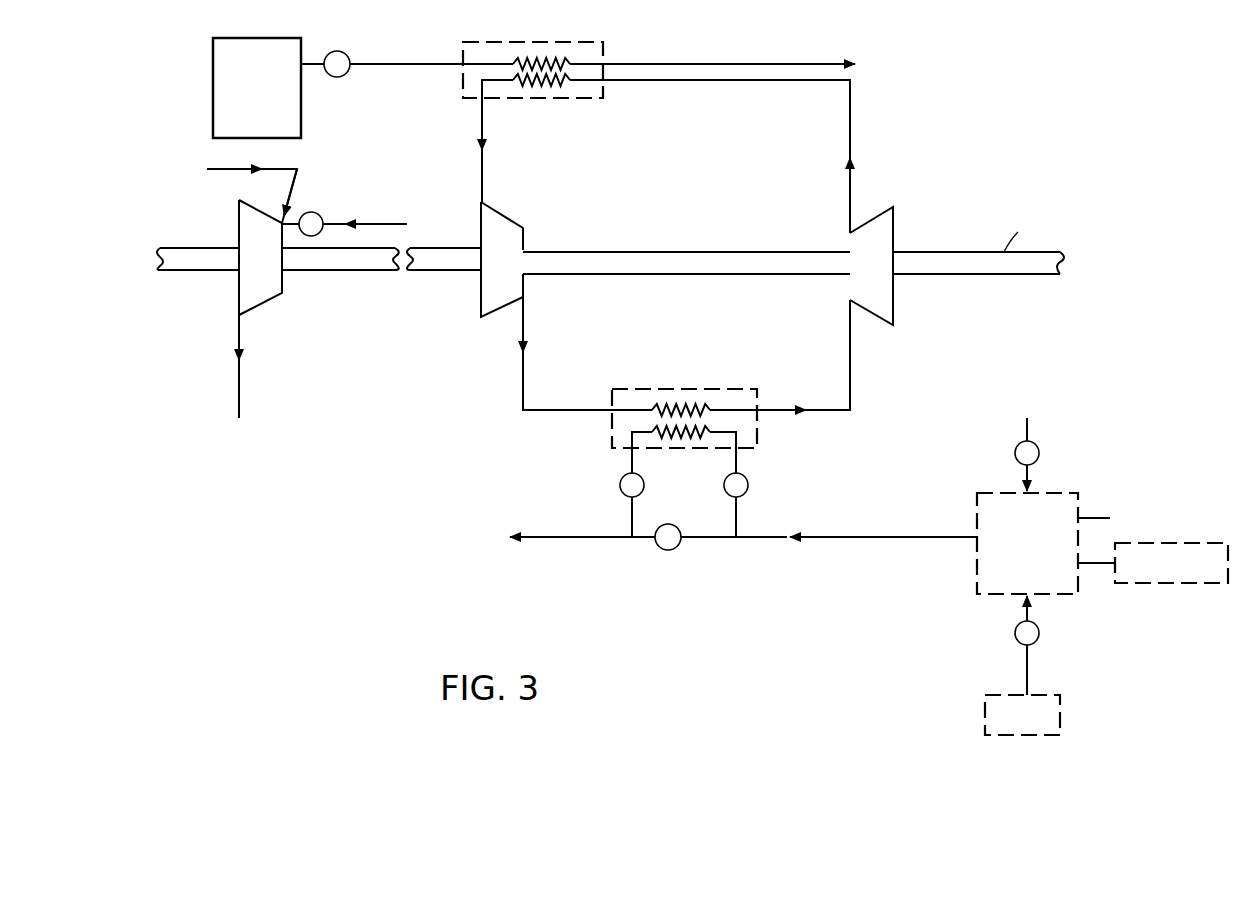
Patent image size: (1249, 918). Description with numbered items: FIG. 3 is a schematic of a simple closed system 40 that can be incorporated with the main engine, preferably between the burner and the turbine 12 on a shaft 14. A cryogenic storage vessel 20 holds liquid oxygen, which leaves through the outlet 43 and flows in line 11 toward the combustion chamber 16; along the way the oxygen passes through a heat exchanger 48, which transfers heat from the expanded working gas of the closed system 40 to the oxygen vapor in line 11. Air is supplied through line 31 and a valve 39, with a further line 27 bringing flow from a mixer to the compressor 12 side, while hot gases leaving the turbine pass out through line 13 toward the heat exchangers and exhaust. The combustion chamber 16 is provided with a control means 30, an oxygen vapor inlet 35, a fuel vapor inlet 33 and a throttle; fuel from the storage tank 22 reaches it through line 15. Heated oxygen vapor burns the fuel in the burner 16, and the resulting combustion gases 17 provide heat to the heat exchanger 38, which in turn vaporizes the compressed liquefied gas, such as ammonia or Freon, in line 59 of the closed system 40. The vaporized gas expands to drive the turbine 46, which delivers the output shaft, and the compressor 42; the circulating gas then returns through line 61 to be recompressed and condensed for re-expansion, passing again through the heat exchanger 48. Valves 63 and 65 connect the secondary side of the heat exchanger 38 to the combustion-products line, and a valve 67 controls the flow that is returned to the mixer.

The line 11 is at (684, 64).
The turbine 12 is at (238, 304).
The line 13 is at (240, 388).
The shaft 14 is at (178, 272).
The line 15 is at (1027, 668).
The combustion chamber 16 is at (977, 588).
The combustion products line 17 is at (808, 537).
The cryogenic storage vessel 20 is at (301, 48).
The storage tank 22 is at (1060, 714).
The line from mixer 27 is at (333, 224).
The control means 30 is at (1176, 583).
The line 31 is at (296, 182).
The fuel vapor inlet 33 is at (1014, 636).
The oxygen vapor inlet 35 is at (1040, 451).
The heat exchanger 38 is at (690, 389).
The valve 39 is at (314, 212).
The closed system 40 is at (852, 388).
The compressor 42 is at (514, 214).
The outlet 43 is at (348, 58).
The turbine 46 is at (893, 218).
The heat exchanger 48 is at (550, 100).
The line 59 is at (562, 410).
The line 61 is at (692, 82).
The valve 63 is at (620, 484).
The valve 65 is at (748, 479).
The valve to mixer 67 is at (668, 550).